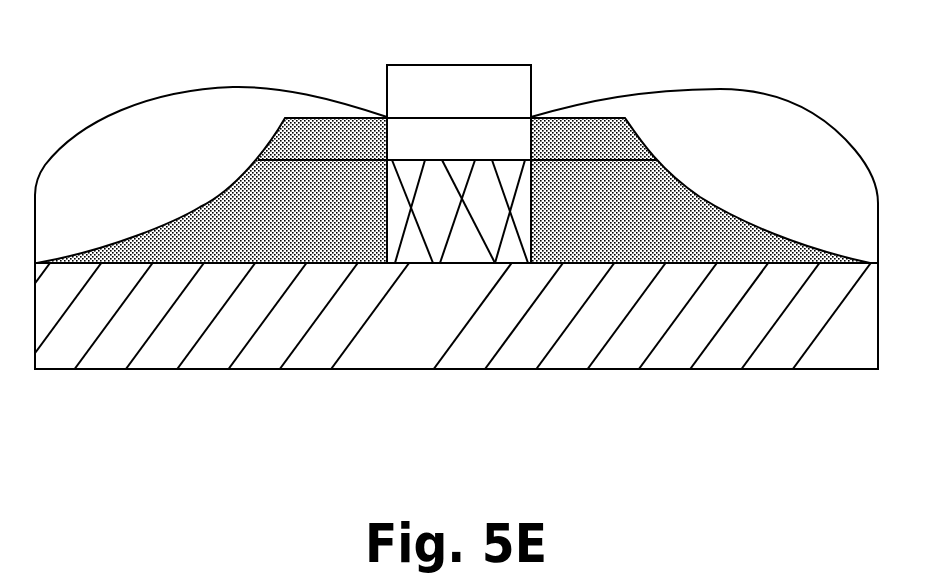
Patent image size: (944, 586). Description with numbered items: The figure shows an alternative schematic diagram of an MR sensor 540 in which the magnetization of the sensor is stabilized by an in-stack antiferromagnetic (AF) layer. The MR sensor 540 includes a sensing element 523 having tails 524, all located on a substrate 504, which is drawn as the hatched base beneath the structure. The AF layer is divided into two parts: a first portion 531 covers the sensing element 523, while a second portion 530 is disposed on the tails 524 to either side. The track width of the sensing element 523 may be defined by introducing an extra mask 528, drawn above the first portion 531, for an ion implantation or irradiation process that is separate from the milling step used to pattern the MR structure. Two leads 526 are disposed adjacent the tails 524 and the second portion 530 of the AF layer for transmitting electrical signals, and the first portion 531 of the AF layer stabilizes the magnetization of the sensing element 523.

The substrate 504 is at (439, 316).
The sensing element 523 is at (459, 211).
The tails 524 is at (453, 190).
The leads 526 is at (456, 175).
The extra mask 528 is at (459, 91).
The second portion of the AF layer 530 is at (305, 140).
The first portion of the AF layer 531 is at (459, 139).
The MR sensor 540 is at (660, 422).